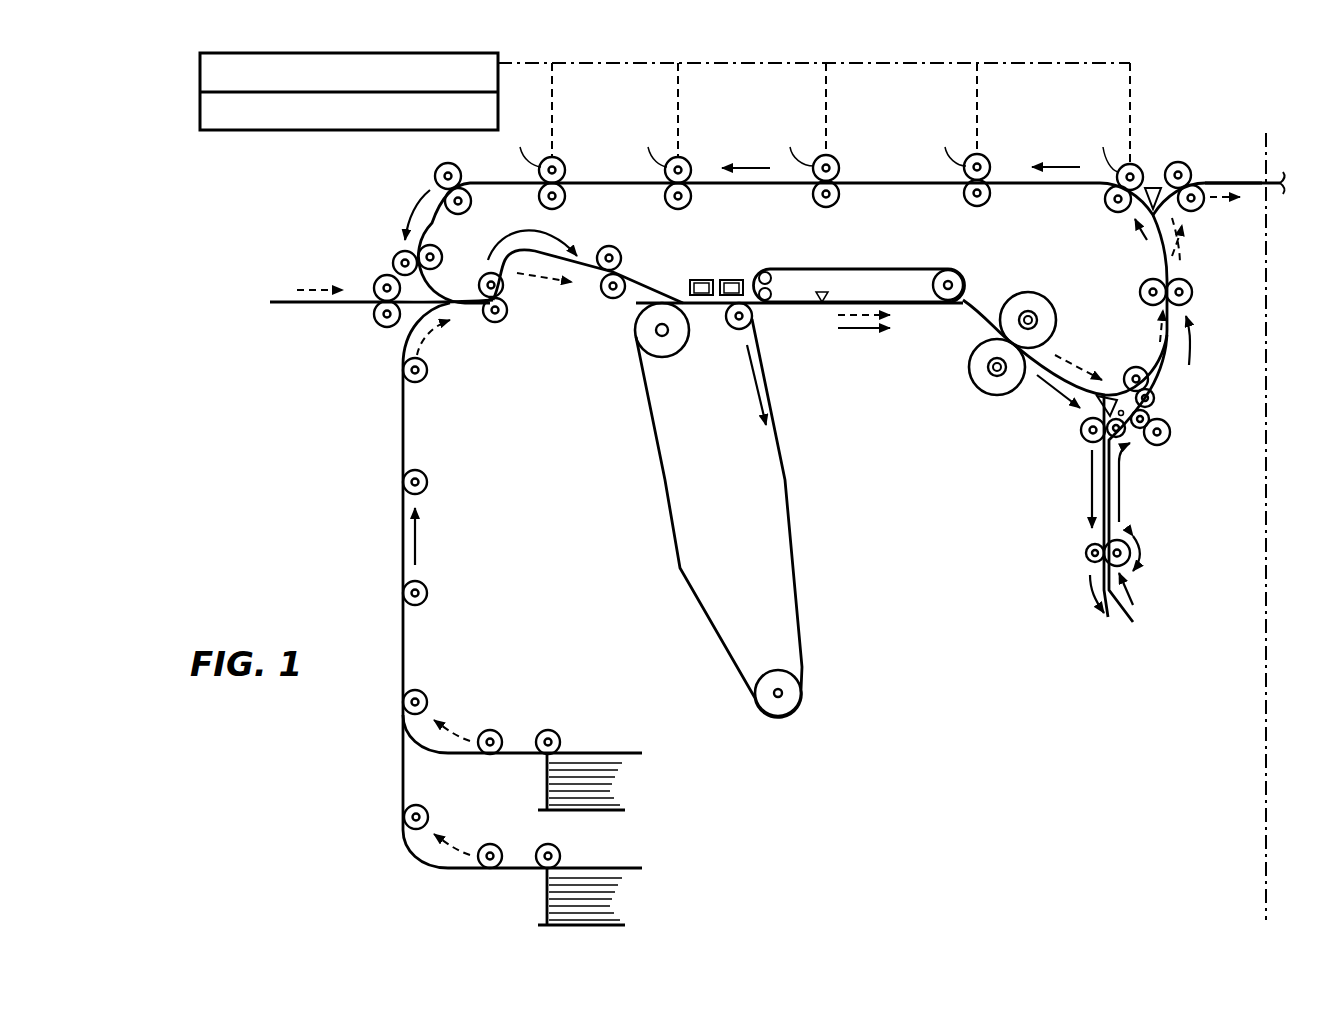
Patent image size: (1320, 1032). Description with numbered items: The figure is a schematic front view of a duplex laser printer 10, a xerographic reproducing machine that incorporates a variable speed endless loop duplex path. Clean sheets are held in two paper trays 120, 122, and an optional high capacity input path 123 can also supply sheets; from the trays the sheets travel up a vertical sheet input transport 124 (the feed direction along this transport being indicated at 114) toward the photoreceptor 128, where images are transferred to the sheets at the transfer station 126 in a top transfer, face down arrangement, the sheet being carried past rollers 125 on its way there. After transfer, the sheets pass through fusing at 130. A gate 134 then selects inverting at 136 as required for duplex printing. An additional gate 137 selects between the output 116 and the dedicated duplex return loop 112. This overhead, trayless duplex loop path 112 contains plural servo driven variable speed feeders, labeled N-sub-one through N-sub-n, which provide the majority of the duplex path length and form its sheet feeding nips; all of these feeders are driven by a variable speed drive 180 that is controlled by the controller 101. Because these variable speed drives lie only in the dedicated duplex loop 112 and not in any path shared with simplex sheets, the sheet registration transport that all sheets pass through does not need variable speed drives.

The duplex laser printer 10 is at (1207, 81).
The controller 101 is at (247, 118).
The duplex loop path 112 is at (918, 197).
The sheet feed path 114 is at (415, 543).
The output 116 is at (1240, 167).
The clean sheet tray 120 is at (590, 752).
The clean sheet tray 122 is at (590, 867).
The high capacity input path 123 is at (270, 306).
The vertical sheet input transport 124 is at (403, 425).
The transfer rollers 125 is at (630, 271).
The transfer 126 is at (703, 280).
The photoreceptor 128 is at (786, 445).
The fusing 130 is at (1102, 295).
The gate 134 is at (1098, 401).
The inverting 136 is at (1060, 490).
The gate 137 is at (1155, 183).
The variable speed drive 180 is at (200, 57).